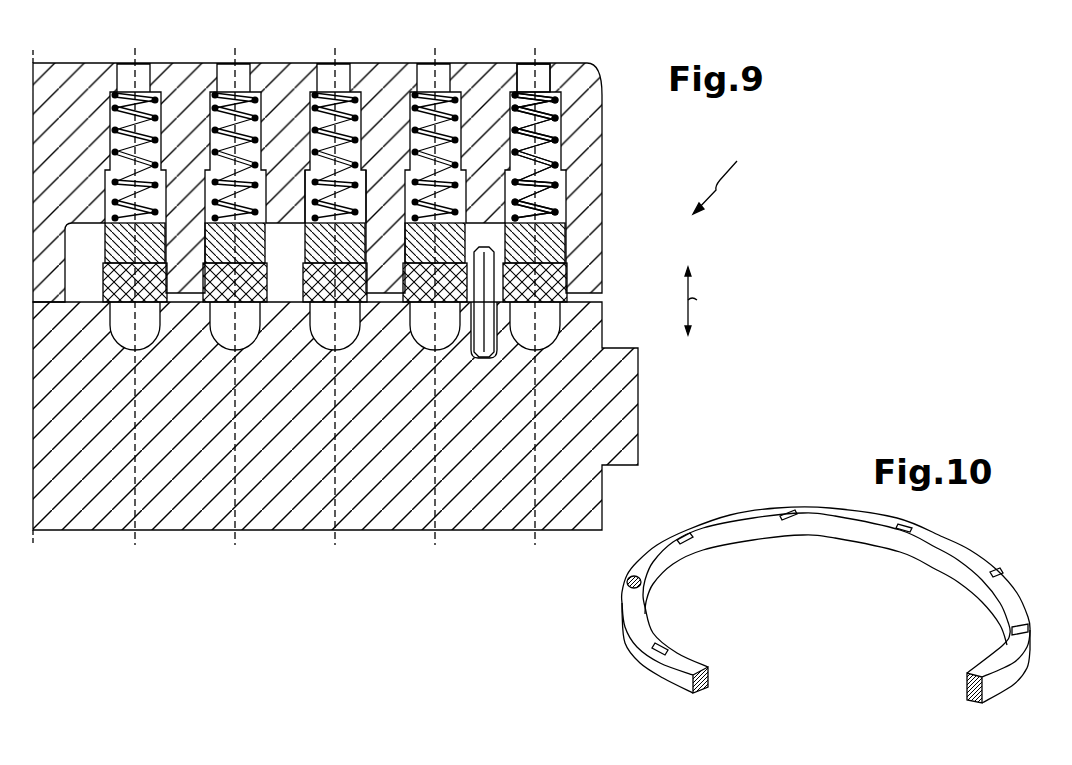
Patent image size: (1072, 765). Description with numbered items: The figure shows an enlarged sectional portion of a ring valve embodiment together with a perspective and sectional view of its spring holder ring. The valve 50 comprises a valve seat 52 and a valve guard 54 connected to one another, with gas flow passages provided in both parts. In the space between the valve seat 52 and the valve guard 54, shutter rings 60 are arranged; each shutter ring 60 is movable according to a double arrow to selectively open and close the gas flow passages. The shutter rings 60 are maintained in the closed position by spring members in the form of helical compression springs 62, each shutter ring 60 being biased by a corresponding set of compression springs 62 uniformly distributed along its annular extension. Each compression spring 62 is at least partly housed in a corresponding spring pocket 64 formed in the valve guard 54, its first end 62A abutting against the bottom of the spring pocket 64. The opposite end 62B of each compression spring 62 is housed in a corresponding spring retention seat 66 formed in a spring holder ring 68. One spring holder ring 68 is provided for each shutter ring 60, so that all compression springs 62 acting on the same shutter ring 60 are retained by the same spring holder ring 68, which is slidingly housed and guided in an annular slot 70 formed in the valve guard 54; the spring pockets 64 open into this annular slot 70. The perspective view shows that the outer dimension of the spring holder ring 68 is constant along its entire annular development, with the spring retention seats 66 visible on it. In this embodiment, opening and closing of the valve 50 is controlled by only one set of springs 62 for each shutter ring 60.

In FIG. 9, the valve 50 is at (725, 180).
In FIG. 9, the valve seat 52 is at (622, 381).
In FIG. 9, the valve guard 54 is at (187, 66).
In FIG. 9, the shutter ring 60 is at (565, 291).
In FIG. 9, the helical compression spring 62 is at (563, 108).
In FIG. 9, the first end of compression spring 62A is at (538, 90).
In FIG. 9, the opposite end of compression spring 62B is at (570, 246).
In FIG. 9, the spring pocket 64 is at (565, 122).
In FIG. 9, the spring retention seat 66 is at (306, 206).
In FIG. 10, the spring retention seat 66 is at (628, 580).
In FIG. 9, the spring holder ring 68 is at (570, 256).
In FIG. 10, the spring holder ring 68 is at (833, 547).
In FIG. 9, the annular slot 70 is at (567, 190).